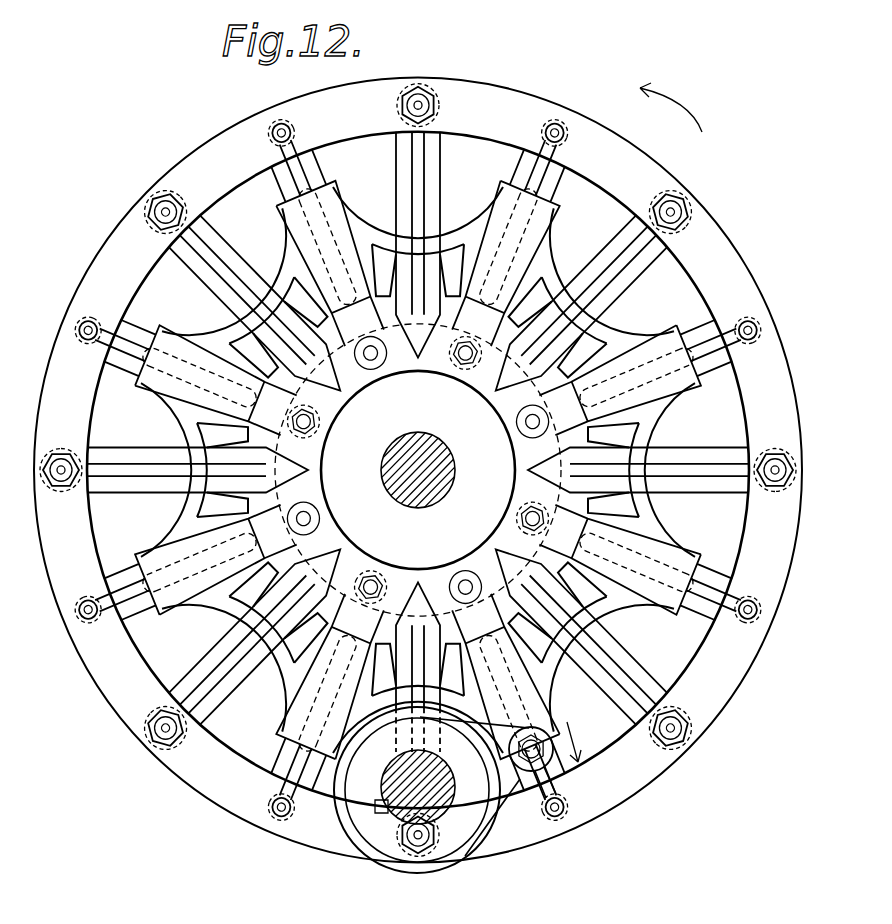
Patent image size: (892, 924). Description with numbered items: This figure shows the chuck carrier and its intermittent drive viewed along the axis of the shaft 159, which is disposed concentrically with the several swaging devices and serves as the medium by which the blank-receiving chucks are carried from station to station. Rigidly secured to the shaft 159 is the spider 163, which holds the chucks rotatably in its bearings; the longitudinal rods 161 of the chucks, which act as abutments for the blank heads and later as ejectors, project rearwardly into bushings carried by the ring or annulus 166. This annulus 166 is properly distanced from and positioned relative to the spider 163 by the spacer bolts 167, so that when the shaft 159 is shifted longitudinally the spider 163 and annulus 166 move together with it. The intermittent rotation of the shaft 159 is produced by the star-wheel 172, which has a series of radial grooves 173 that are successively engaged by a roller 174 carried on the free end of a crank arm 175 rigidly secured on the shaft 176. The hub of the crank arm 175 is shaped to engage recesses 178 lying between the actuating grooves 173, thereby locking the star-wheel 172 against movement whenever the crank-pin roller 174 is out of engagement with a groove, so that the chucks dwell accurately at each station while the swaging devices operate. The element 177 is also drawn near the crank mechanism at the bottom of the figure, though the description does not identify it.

The shaft 159 is at (427, 440).
The longitudinal rod 161 is at (424, 100).
The spider 163 is at (128, 330).
The ring or annulus 166 is at (722, 677).
The spacer-bolts 167 is at (268, 131).
The star-wheel 172 is at (542, 251).
The radial grooves 173 is at (332, 199).
The roller 174 is at (556, 767).
The crank-arm 175 is at (493, 806).
The shaft 176 is at (397, 815).
The housing 177 is at (347, 824).
The recesses 178 is at (641, 610).